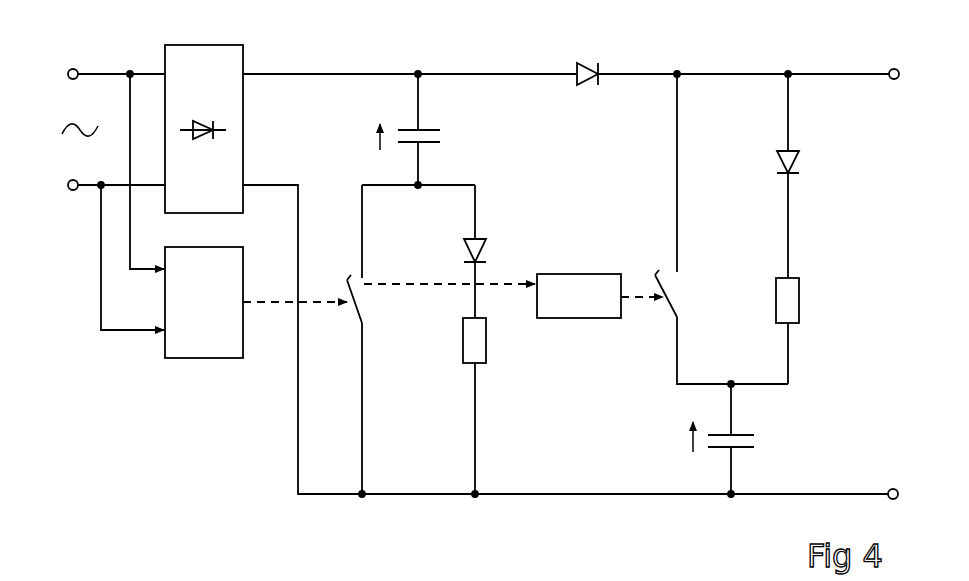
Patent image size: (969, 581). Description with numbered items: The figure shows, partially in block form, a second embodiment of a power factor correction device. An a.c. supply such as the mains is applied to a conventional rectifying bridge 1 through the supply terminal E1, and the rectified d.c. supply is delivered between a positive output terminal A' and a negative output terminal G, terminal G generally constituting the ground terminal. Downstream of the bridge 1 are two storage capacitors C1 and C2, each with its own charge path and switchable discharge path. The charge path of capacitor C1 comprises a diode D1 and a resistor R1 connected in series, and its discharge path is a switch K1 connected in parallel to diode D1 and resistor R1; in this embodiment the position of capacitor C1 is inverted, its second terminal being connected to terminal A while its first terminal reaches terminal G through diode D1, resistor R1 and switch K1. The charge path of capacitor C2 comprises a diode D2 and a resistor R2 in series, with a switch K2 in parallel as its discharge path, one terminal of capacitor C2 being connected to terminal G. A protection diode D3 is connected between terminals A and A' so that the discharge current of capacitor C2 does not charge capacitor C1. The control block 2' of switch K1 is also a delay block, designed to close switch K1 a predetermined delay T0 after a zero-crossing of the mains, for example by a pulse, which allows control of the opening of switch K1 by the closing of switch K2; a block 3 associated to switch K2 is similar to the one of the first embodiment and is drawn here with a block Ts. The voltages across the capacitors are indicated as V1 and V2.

The rectifying bridge 1 is at (243, 61).
The control block 2' is at (187, 395).
The block 3 is at (573, 274).
The terminal A is at (356, 36).
The positive output terminal A' is at (864, 50).
The negative output terminal G is at (891, 488).
The a.c. supply terminal E1 is at (72, 49).
The predetermined delay T0 is at (224, 216).
The timer Ts is at (600, 296).
The storage capacitor C1 is at (437, 129).
The storage capacitor C2 is at (753, 439).
The first voltage V1 is at (360, 136).
The second voltage V2 is at (673, 437).
The diode D1 is at (454, 251).
The diode D2 is at (809, 176).
The protection diode D3 is at (590, 58).
The resistor R1 is at (454, 406).
The resistor R2 is at (807, 331).
The switch K1 is at (441, 339).
The switch K2 is at (721, 229).